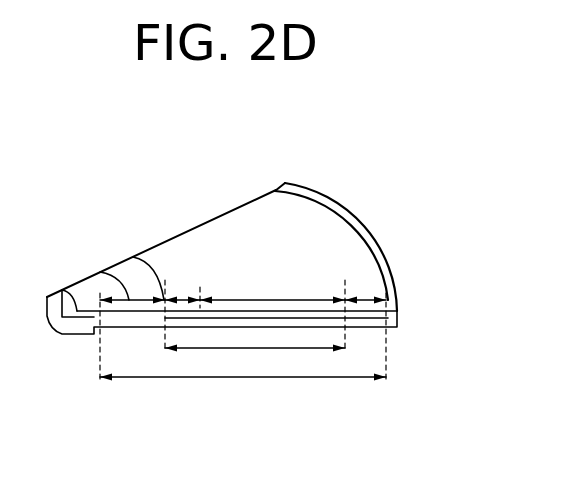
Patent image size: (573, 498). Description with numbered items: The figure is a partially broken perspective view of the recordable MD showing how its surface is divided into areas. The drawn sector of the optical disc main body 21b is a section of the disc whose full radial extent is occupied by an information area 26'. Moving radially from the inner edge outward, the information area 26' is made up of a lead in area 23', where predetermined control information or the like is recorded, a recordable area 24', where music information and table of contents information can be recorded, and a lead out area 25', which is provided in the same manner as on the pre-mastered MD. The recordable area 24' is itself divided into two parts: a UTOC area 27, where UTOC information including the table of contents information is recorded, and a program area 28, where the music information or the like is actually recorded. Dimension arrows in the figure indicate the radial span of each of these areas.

The optical disc main body 21b is at (240, 218).
The lead in area 23' is at (121, 300).
The UTOC area 27 is at (183, 300).
The program area 28 is at (271, 298).
The lead out area 25' is at (367, 277).
The recordable area 24' is at (276, 375).
The information area 26' is at (243, 405).